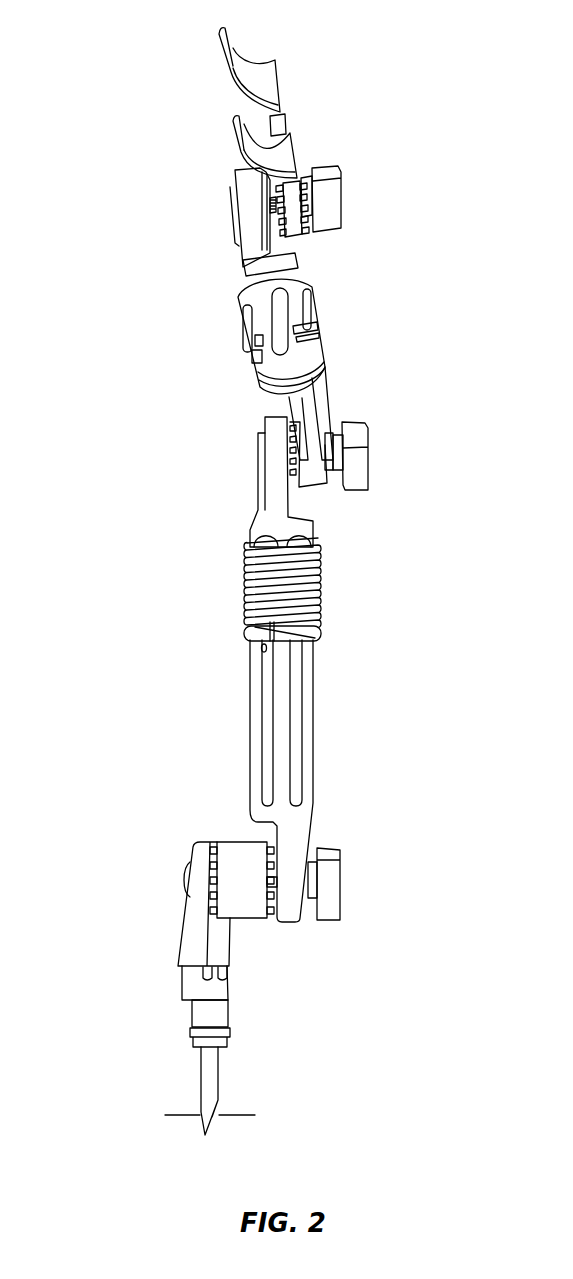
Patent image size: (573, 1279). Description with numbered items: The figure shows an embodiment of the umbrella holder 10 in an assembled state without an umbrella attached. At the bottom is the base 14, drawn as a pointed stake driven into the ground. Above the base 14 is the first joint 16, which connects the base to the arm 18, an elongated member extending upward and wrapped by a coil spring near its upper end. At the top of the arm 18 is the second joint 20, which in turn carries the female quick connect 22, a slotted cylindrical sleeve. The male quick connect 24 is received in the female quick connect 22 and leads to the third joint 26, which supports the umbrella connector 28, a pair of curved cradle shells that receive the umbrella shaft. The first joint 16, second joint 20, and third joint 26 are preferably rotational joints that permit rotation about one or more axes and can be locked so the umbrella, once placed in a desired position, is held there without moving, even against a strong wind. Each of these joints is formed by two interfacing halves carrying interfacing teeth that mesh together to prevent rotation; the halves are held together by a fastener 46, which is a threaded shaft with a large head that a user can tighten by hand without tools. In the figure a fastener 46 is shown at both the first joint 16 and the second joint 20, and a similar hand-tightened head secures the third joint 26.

The umbrella holder 10 is at (93, 64).
The umbrella connector 28 is at (253, 68).
The third joint 26 is at (344, 176).
The male quick connect 24 is at (250, 278).
The female quick connect 22 is at (317, 303).
The fastener 46 is at (360, 440).
The second joint 20 is at (232, 458).
The arm 18 is at (307, 706).
The first joint 16 is at (174, 822).
The base 14 is at (238, 1068).